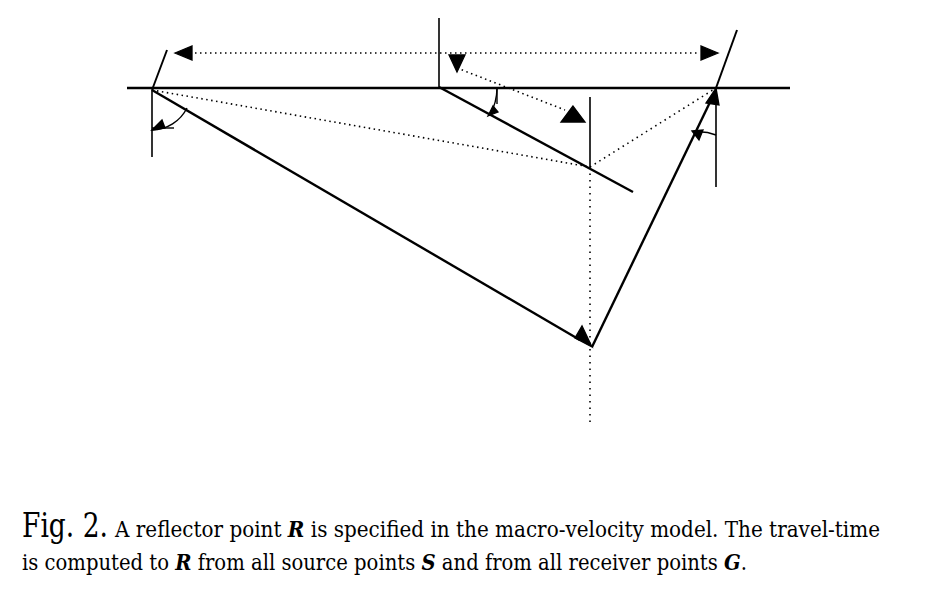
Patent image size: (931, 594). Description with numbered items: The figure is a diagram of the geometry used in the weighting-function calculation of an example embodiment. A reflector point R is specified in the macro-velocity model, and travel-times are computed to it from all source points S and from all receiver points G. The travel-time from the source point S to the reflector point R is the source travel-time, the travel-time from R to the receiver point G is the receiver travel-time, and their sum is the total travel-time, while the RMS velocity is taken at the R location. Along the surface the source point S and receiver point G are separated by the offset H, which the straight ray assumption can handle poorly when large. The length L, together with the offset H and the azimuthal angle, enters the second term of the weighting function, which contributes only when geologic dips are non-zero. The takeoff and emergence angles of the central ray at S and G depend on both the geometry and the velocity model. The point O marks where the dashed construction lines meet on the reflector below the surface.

The source point S is at (353, 195).
The receiver point G is at (685, 188).
The reflector point projection / reflection point on model O is at (635, 150).
The reflector point R is at (605, 354).
The offset H is at (446, 55).
The parameter L is at (521, 95).